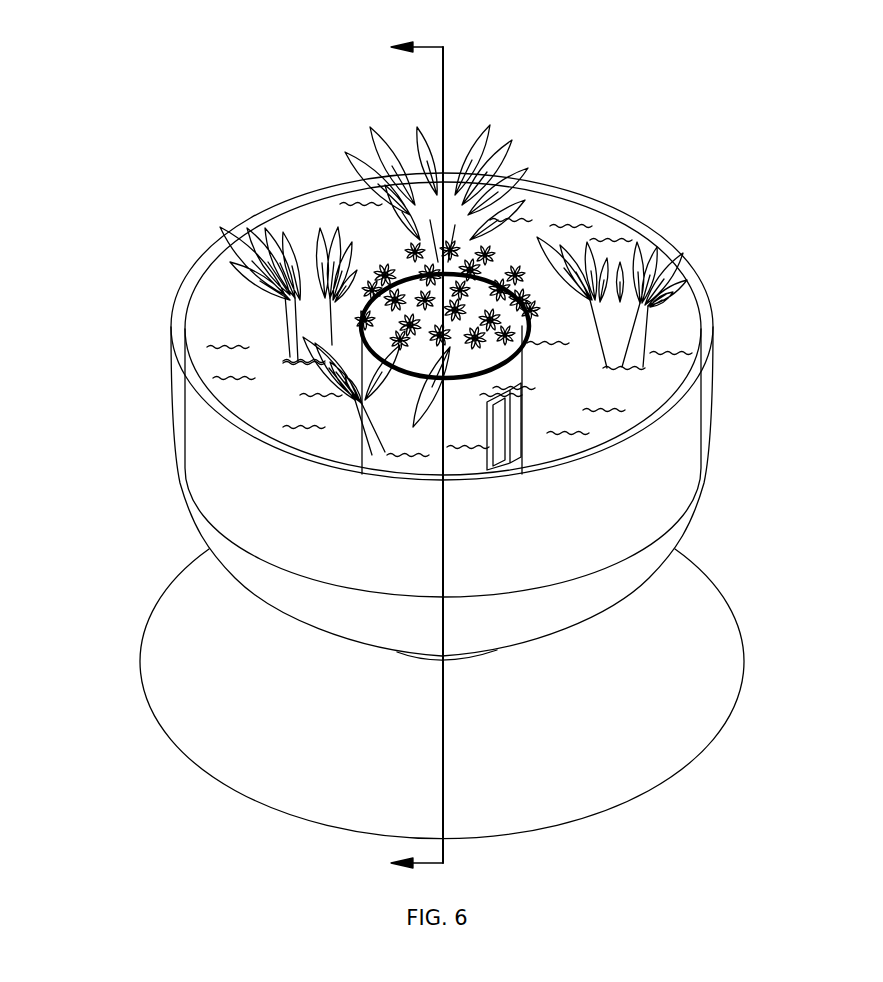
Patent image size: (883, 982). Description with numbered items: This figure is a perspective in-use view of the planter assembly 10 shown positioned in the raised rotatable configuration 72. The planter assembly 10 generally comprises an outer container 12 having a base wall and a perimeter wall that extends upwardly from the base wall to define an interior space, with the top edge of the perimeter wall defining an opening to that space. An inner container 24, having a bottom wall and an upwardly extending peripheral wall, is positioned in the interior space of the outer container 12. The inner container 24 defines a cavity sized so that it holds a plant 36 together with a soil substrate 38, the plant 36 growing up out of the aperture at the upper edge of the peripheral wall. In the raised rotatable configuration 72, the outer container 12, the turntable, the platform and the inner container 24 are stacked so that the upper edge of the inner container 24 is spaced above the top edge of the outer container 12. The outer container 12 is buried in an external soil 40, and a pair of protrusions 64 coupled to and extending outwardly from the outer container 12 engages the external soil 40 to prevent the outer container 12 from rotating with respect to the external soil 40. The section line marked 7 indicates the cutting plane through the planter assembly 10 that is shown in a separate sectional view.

The section line 7- 7 is at (417, 451).
The planter assembly 10 is at (575, 240).
The outer container 12 is at (553, 361).
The inner container 24 is at (498, 264).
The plant 36 is at (395, 180).
The soil substrate 38 is at (360, 320).
The external soil 40 is at (601, 427).
The pair of protrusions 64 is at (503, 450).
The raised rotatable configuration 72 is at (352, 488).